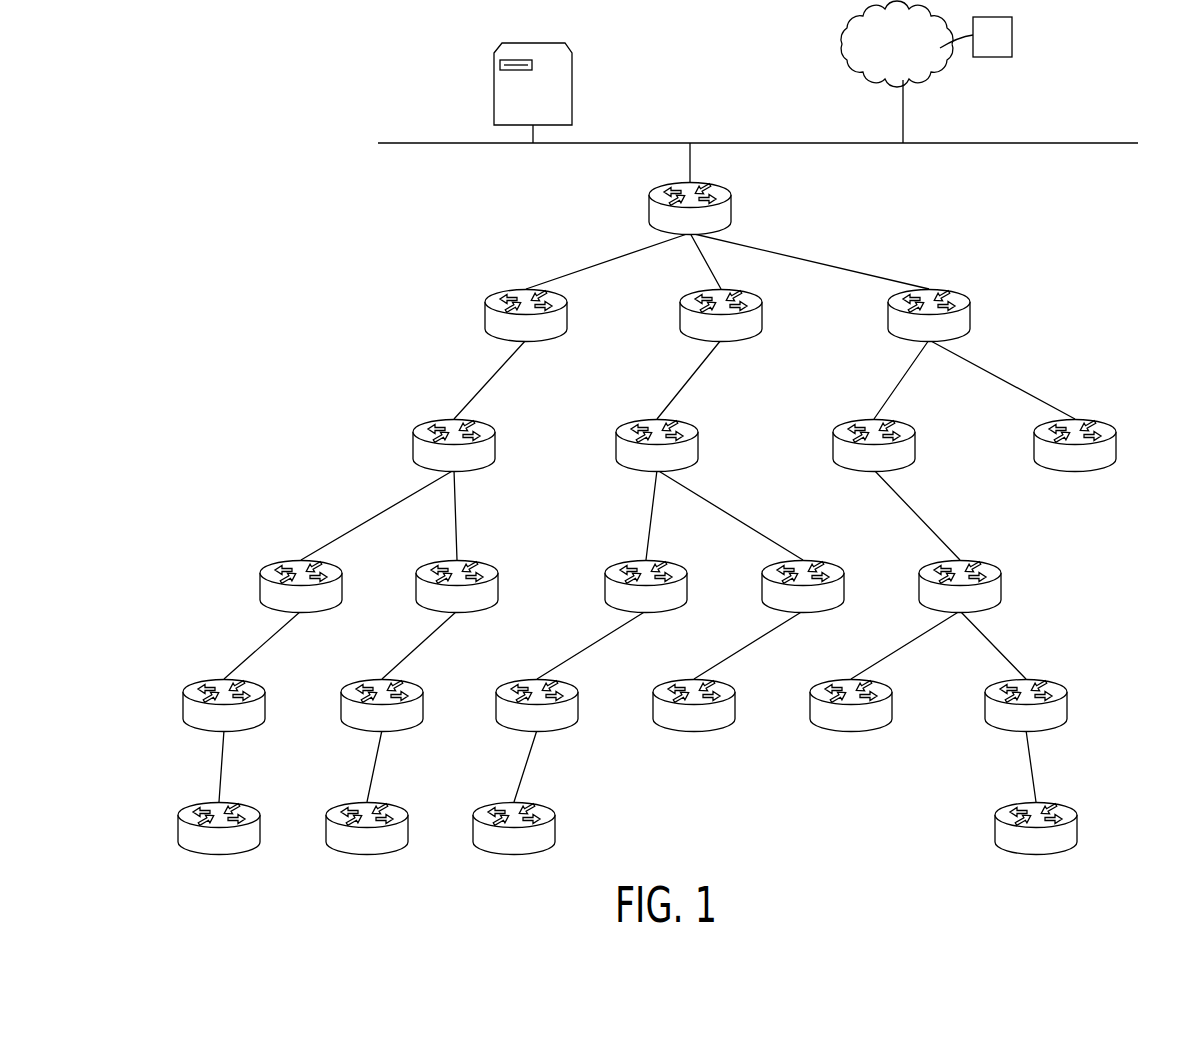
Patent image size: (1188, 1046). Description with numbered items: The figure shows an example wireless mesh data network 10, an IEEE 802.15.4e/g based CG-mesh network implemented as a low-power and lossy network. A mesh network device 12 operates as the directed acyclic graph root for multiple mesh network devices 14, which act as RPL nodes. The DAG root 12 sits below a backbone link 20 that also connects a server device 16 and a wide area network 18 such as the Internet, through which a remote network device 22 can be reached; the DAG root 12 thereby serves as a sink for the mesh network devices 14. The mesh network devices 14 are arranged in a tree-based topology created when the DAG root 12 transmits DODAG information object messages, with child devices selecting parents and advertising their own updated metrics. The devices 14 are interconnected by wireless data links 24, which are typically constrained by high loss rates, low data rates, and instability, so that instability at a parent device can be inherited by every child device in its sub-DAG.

The wireless mesh data network 10 is at (1086, 252).
The mesh network device operating as DAG root 12 is at (732, 213).
The mesh network device 14 is at (568, 319).
The server device 16 is at (572, 78).
The wide area network 18 is at (885, 72).
The backbone link 20 is at (997, 143).
The remote network device 22 is at (982, 49).
The wireless data link 24 is at (545, 283).